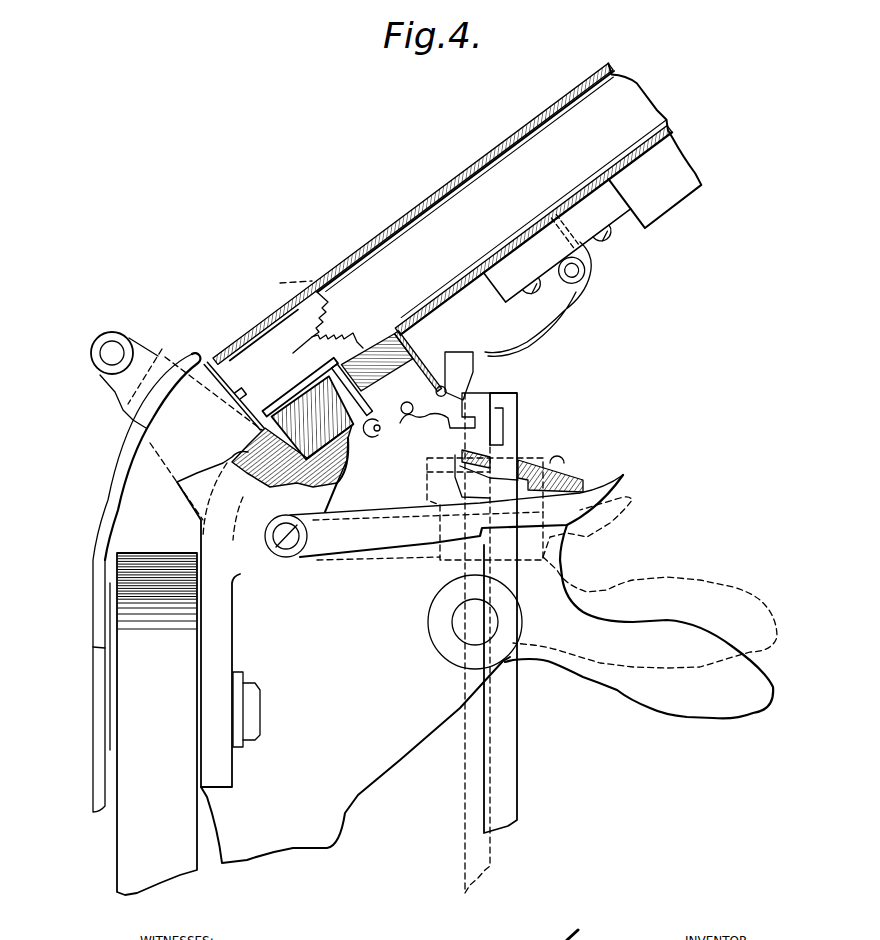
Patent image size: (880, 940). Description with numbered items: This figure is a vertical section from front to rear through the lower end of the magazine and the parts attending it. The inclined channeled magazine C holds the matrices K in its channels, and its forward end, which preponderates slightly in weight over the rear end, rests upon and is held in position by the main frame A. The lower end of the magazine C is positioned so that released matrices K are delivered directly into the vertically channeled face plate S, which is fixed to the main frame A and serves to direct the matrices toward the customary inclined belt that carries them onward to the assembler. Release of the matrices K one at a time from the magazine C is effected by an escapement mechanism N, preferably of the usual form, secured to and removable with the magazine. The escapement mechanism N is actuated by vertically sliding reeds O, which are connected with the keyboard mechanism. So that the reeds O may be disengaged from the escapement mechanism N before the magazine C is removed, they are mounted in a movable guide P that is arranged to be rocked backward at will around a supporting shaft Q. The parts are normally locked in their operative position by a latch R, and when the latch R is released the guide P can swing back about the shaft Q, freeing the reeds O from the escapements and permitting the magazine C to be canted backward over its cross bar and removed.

The inclined channeled magazine C is at (463, 270).
The matrices K is at (282, 387).
The escapement mechanism N is at (413, 393).
The vertically sliding reeds O is at (515, 413).
The movable guide P is at (533, 450).
The latch R is at (396, 539).
The supporting shaft Q is at (463, 627).
The vertically channeled face plate S is at (93, 605).
The main frame A is at (333, 471).